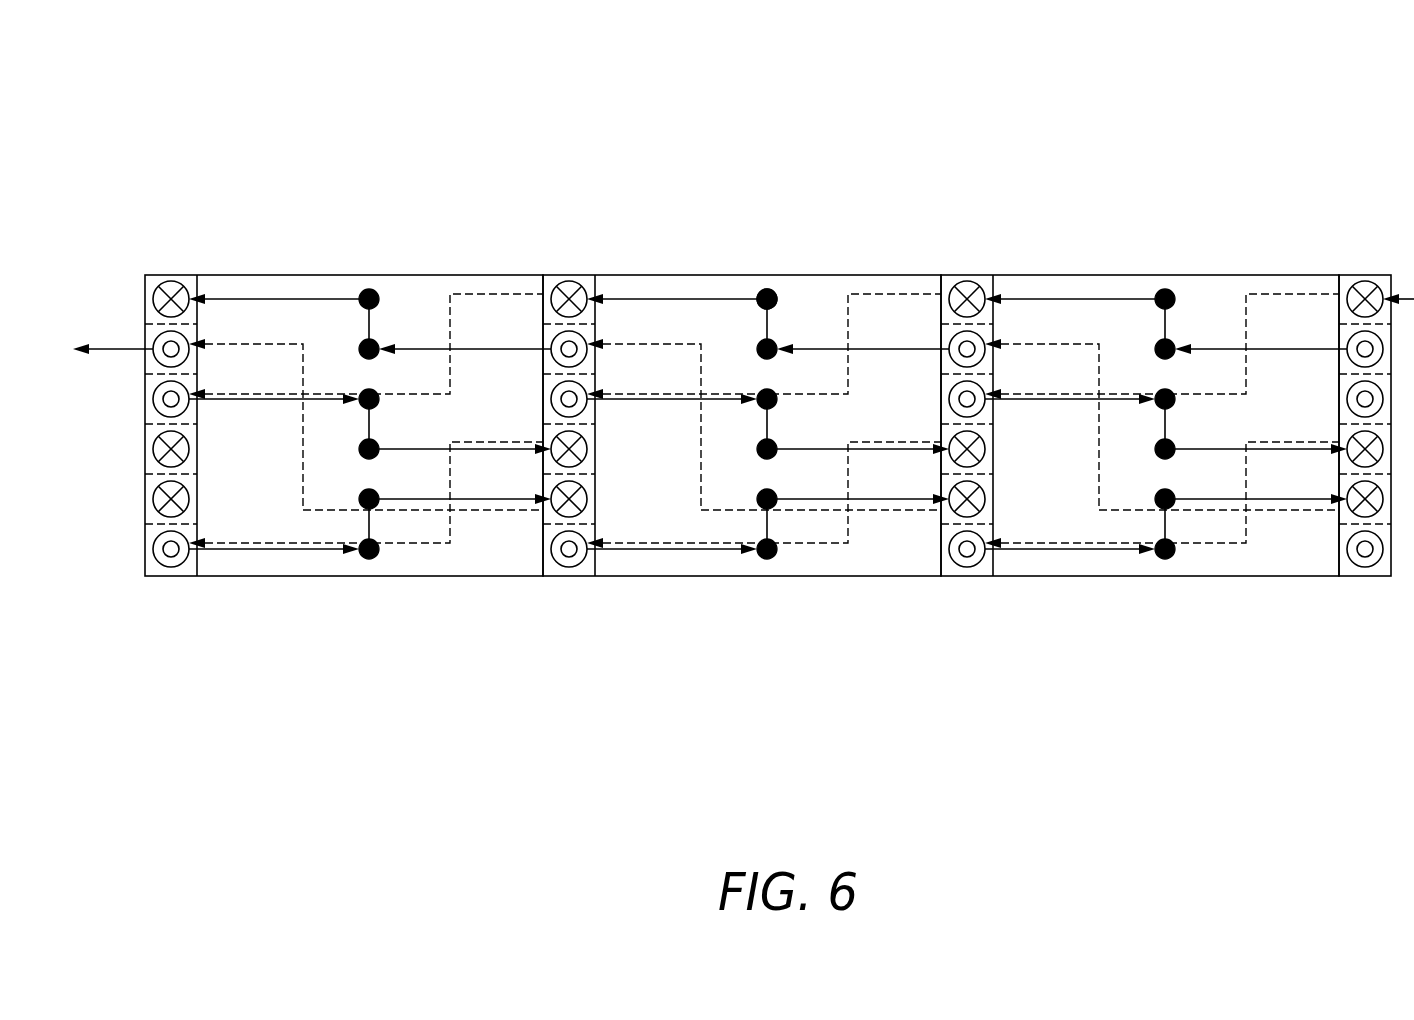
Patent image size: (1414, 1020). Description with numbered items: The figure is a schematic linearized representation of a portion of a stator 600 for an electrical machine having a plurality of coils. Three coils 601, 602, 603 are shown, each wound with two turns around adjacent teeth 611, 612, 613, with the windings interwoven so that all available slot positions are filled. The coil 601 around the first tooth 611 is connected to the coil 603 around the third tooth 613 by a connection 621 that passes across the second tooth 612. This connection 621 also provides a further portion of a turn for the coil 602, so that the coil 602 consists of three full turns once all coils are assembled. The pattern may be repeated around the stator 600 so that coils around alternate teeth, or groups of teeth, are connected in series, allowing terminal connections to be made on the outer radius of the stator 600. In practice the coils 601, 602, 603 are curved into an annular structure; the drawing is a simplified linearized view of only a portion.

The stator 600 is at (743, 297).
The coil 601 is at (312, 365).
The coil 602 is at (744, 355).
The coil 603 is at (1169, 365).
The first tooth 611 is at (257, 486).
The second tooth 612 is at (661, 486).
The third tooth 613 is at (1065, 486).
The connection 621 is at (767, 289).